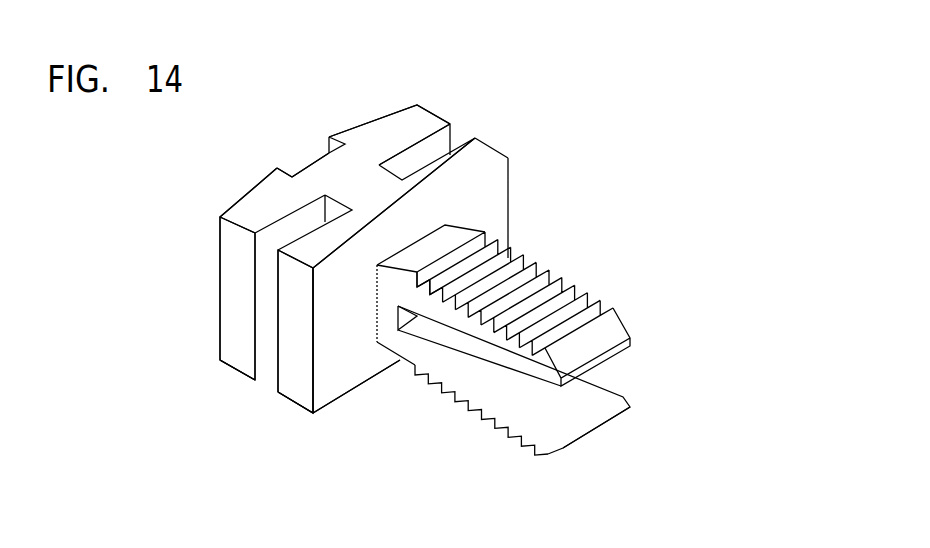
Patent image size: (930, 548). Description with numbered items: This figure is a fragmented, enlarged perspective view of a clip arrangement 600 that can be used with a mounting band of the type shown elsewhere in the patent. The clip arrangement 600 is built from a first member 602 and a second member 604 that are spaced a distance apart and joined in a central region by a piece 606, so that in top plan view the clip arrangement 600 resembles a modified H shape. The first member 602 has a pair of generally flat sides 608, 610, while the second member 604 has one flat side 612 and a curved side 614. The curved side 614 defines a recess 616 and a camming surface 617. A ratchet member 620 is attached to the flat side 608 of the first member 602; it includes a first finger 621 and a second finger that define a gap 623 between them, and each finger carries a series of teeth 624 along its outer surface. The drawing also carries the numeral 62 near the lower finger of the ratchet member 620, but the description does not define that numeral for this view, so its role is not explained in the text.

The clip arrangement 600 is at (455, 80).
The first member 602 is at (302, 382).
The second member 604 is at (220, 313).
The piece 606 is at (364, 188).
The flat side 608 is at (372, 343).
The flat side 610 is at (279, 380).
The flat side 612 is at (258, 355).
The curved side 614 is at (242, 195).
The recess 616 is at (313, 162).
The camming surface 617 is at (380, 117).
The ratchet member 620 is at (571, 276).
The first finger 621 is at (631, 320).
The teeth 624 is at (547, 273).
The latch plate 62 is at (625, 396).
The gap 623 is at (553, 412).